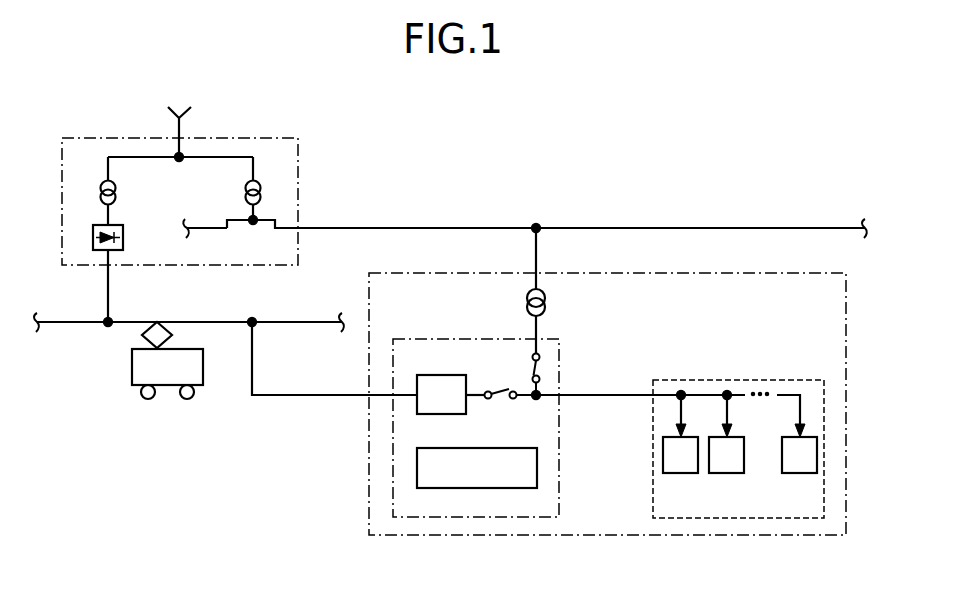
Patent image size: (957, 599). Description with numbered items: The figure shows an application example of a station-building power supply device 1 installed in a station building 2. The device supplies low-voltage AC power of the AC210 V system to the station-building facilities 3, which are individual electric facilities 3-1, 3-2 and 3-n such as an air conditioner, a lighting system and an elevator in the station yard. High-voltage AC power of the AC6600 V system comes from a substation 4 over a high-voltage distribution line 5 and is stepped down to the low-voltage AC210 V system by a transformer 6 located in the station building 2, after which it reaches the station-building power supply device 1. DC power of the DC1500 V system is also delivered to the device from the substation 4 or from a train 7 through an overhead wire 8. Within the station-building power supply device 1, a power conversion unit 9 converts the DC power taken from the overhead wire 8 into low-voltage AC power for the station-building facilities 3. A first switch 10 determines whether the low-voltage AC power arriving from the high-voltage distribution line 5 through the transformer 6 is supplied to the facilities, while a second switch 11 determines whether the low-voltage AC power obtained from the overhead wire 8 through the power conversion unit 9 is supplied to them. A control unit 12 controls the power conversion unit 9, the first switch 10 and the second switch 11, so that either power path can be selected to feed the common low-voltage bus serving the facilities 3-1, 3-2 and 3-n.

The station-building power supply device 1 is at (475, 339).
The station building 2 is at (369, 484).
The station-building facilities 3 is at (738, 433).
The electric facility 3-1 is at (681, 474).
The electric facility 3-2 is at (727, 474).
The electric facility 3-n is at (800, 474).
The substation 4 is at (301, 157).
The high-voltage distribution line 5 is at (708, 228).
The transformer 6 is at (546, 302).
The train 7 is at (132, 366).
The overhead wire 8 is at (283, 322).
The power conversion unit 9 is at (441, 375).
The first switch 10 is at (541, 365).
The second switch 11 is at (503, 390).
The control unit 12 is at (503, 448).